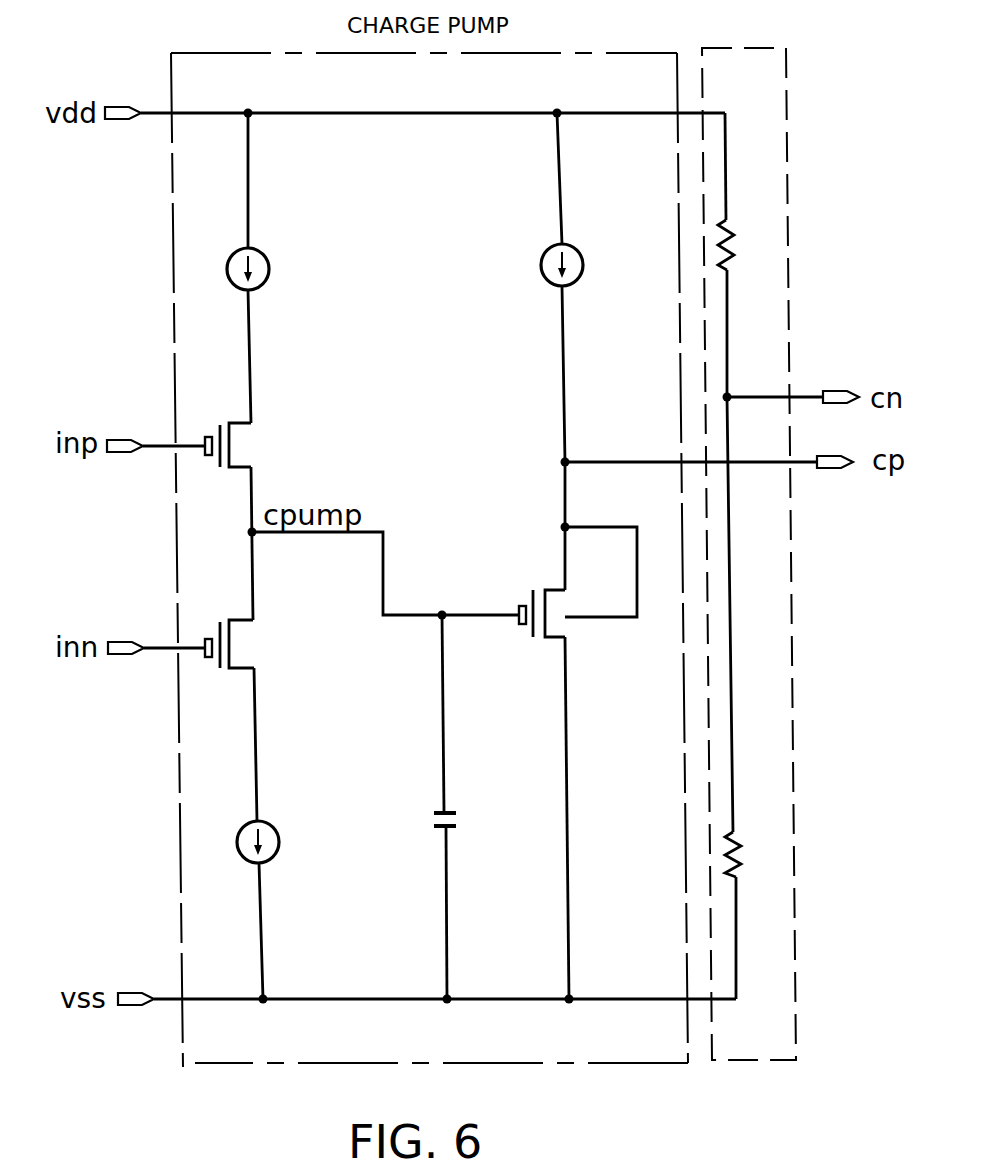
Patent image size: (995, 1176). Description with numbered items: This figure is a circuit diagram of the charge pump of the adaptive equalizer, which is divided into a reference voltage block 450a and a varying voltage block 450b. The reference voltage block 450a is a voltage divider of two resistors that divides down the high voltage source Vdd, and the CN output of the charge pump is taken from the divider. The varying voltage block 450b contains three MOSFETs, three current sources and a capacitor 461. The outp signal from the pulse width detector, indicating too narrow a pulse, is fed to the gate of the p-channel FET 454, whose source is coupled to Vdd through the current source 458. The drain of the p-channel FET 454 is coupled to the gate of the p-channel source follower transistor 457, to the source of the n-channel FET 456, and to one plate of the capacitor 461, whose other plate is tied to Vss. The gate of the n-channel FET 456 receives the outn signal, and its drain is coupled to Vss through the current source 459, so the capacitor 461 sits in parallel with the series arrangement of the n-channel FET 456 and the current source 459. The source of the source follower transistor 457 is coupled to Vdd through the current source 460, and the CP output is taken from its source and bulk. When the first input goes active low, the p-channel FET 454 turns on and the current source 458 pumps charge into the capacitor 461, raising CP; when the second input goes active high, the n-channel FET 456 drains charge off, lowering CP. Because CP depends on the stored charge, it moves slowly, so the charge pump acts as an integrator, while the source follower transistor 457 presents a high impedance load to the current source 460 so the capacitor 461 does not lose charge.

The reference voltage block 450a is at (787, 133).
The varying voltage block 450b is at (170, 258).
The p-channel FET 454 is at (241, 432).
The n-channel FET 456 is at (243, 632).
The source follower transistor 457 is at (557, 600).
The current source 458 is at (269, 266).
The current source 459 is at (276, 830).
The current source 460 is at (541, 263).
The capacitor 461 is at (458, 819).